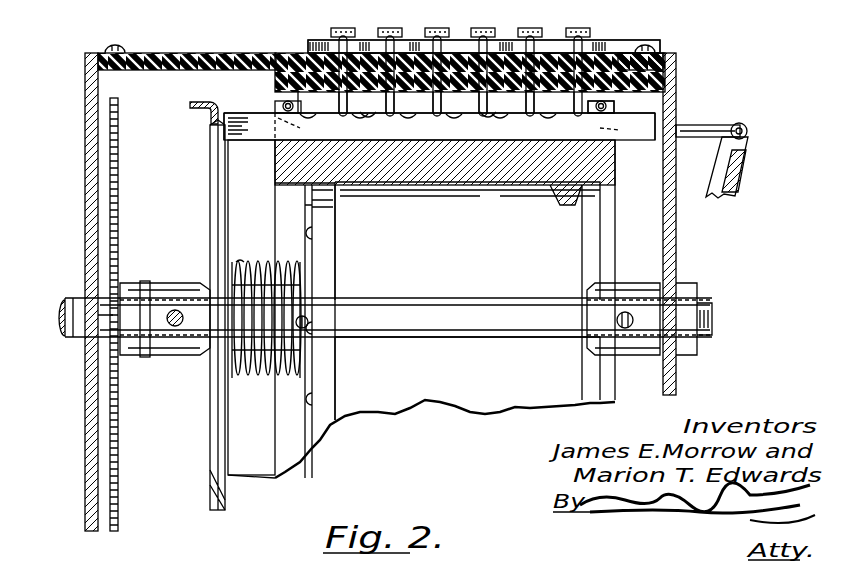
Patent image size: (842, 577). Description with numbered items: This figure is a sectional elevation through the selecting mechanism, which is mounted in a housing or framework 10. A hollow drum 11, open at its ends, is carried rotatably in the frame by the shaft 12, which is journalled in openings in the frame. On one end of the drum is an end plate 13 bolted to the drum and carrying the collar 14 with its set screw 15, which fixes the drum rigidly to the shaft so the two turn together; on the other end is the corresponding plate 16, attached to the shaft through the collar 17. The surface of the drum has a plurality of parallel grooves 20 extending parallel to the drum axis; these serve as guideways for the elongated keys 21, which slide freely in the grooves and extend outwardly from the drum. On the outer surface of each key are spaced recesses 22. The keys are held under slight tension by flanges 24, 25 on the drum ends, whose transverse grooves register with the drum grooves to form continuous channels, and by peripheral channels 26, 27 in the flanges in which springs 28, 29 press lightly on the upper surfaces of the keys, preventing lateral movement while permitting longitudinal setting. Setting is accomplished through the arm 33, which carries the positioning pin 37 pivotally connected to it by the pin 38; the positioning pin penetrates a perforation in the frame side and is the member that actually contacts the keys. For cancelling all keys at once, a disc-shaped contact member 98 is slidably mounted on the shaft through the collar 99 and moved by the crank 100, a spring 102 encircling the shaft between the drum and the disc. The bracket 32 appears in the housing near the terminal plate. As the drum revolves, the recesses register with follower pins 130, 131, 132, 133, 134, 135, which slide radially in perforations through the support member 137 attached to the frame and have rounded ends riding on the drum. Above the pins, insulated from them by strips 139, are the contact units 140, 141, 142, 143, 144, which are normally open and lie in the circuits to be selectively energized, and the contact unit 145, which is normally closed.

The housing or framework 10 is at (676, 218).
The drum 11 is at (606, 162).
The shaft 12 is at (462, 306).
The end plate 13 is at (308, 210).
The collar 14 is at (280, 378).
The set screw 15 is at (308, 312).
The plate 16 is at (585, 255).
The collar 17 is at (640, 350).
The grooves 20 is at (600, 140).
The keys 21 is at (262, 142).
The recesses 22 is at (366, 114).
The flange 24 is at (278, 106).
The flange 25 is at (616, 112).
The peripheral channel 26 is at (299, 126).
The peripheral channel 27 is at (622, 130).
The spring 28 is at (283, 103).
The spring 29 is at (604, 103).
The hook bracket 32 is at (188, 105).
The arm 33 is at (738, 156).
The positioning pin 37 is at (694, 126).
The pin 38 is at (748, 126).
The contact member 98 is at (212, 210).
The collar 99 is at (172, 284).
The crank 100 is at (176, 328).
The spring 102 is at (250, 264).
The follower pin 130 is at (318, 105).
The follower pin 131 is at (366, 105).
The follower pin 132 is at (413, 105).
The follower pin 133 is at (460, 105).
The follower pin 134 is at (506, 105).
The follower pin 135 is at (554, 105).
The support member 137 is at (213, 58).
The insulating strips 139 is at (595, 38).
The contact unit 140 is at (335, 28).
The contact unit 141 is at (382, 28).
The contact unit 142 is at (429, 28).
The contact unit 143 is at (475, 28).
The contact unit 144 is at (522, 28).
The contact unit 145 is at (570, 28).